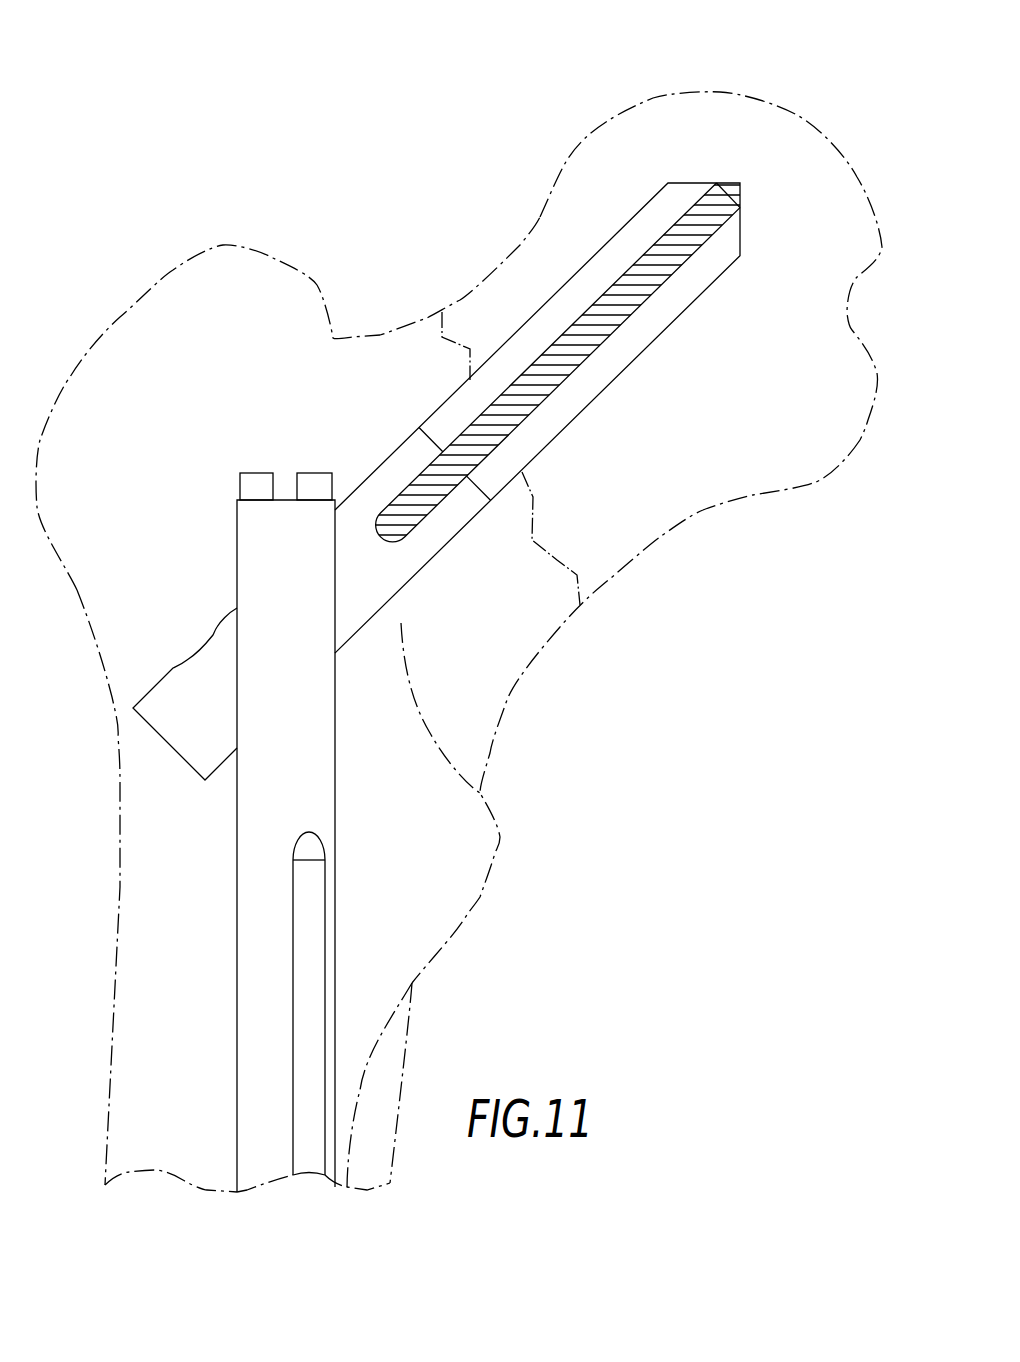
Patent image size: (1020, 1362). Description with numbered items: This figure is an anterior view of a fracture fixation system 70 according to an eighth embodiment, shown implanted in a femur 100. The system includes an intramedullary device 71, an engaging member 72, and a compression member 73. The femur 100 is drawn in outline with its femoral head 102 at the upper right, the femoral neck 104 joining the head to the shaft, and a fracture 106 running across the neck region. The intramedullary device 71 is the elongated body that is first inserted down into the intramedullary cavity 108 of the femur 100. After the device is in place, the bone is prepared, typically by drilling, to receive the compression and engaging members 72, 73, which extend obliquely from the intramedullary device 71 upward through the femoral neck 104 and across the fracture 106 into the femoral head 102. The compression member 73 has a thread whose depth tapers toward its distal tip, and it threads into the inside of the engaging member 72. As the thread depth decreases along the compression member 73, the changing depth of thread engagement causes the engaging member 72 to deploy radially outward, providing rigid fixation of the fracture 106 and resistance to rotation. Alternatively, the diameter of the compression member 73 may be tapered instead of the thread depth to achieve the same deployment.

The fracture fixation system 70 is at (466, 687).
The intramedullary device 71 is at (237, 927).
The engaging member 72 is at (540, 418).
The compression member 73 is at (550, 395).
The femur 100 is at (128, 302).
The femoral head 102 is at (688, 88).
The femoral neck 104 is at (680, 525).
The fracture 106 is at (442, 312).
The intramedullary cavity 108 is at (205, 1060).